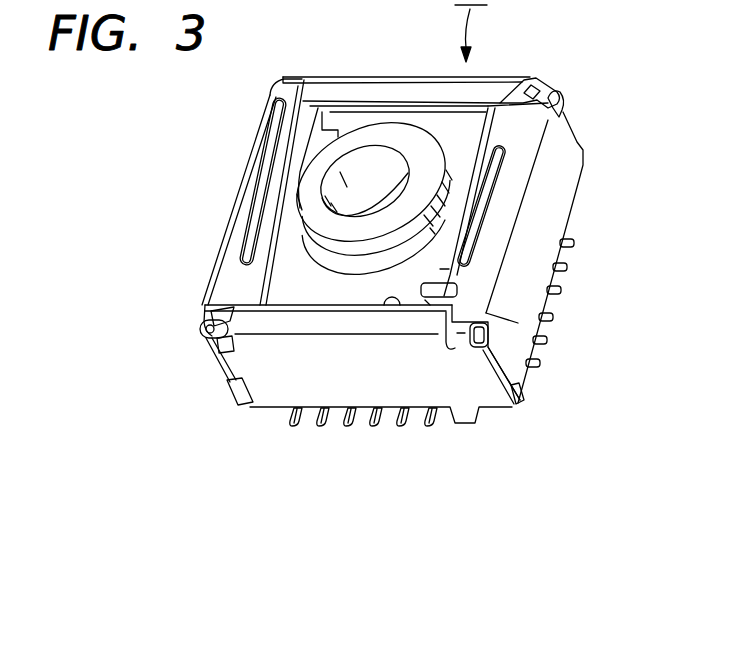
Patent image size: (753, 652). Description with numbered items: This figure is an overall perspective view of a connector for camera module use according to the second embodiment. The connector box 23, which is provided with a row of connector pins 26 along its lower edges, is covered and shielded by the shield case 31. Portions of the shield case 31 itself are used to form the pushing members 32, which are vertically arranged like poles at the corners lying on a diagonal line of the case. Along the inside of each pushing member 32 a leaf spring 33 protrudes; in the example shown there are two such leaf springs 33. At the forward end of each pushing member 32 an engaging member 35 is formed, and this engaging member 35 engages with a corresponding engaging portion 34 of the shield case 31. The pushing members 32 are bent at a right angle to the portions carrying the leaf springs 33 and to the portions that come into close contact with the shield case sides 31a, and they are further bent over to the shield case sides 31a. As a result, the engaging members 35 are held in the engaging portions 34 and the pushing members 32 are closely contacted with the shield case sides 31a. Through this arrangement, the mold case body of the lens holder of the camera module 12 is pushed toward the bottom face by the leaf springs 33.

The camera module 12 is at (372, 163).
The connector box 23 is at (393, 307).
The connector pins 26 is at (556, 317).
The shield case 31 is at (465, 382).
The shield case side 31a is at (518, 323).
The pushing member 32 is at (240, 255).
The leaf spring 33 is at (297, 162).
The engaging portion 34 is at (545, 86).
The engaging member 35 is at (565, 98).